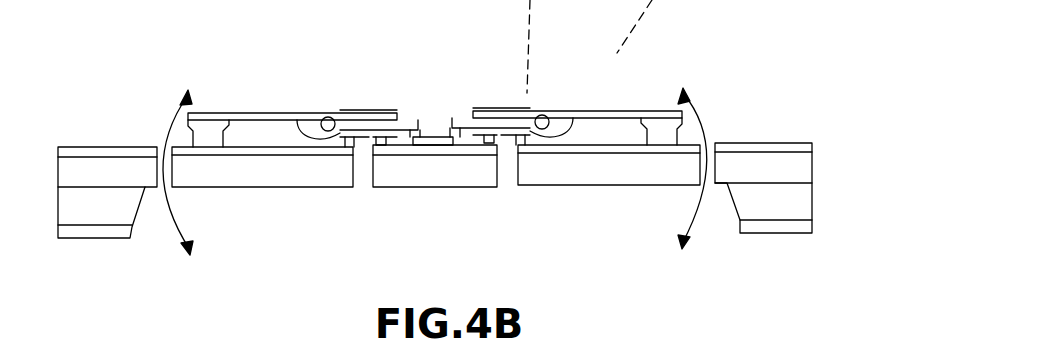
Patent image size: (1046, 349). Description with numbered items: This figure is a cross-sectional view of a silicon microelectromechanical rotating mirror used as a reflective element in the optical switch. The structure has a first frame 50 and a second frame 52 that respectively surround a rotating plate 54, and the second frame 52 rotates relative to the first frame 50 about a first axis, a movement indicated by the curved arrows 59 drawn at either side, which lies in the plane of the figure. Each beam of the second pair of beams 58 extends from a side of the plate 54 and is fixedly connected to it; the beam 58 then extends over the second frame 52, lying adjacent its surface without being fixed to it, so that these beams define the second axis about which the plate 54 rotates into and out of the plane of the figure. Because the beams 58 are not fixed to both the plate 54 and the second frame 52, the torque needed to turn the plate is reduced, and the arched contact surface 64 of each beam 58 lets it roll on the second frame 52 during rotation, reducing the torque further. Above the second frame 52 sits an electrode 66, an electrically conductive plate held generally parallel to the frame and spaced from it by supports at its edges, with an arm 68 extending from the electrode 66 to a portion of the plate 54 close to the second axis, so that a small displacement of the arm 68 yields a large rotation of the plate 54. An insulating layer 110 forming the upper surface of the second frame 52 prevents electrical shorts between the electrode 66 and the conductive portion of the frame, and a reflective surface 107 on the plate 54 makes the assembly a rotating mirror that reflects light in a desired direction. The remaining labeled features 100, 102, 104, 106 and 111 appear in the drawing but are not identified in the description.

The first frame 50 is at (138, 145).
The second frame 52 is at (225, 188).
The rotating plate 54 is at (442, 187).
The second pair of beams 58 is at (325, 120).
The arrows 59 is at (173, 227).
The arched contact surface 64 is at (307, 128).
The electrode 66 is at (268, 113).
The arm 68 is at (382, 110).
The lower block portion 100 is at (805, 200).
The upper block portion 102 is at (87, 167).
The substrate body 104 is at (257, 163).
The center substrate body 106 is at (412, 177).
The reflective surface 107 is at (432, 133).
The insulating layer 110 is at (353, 150).
The bottom layer 111 is at (797, 237).